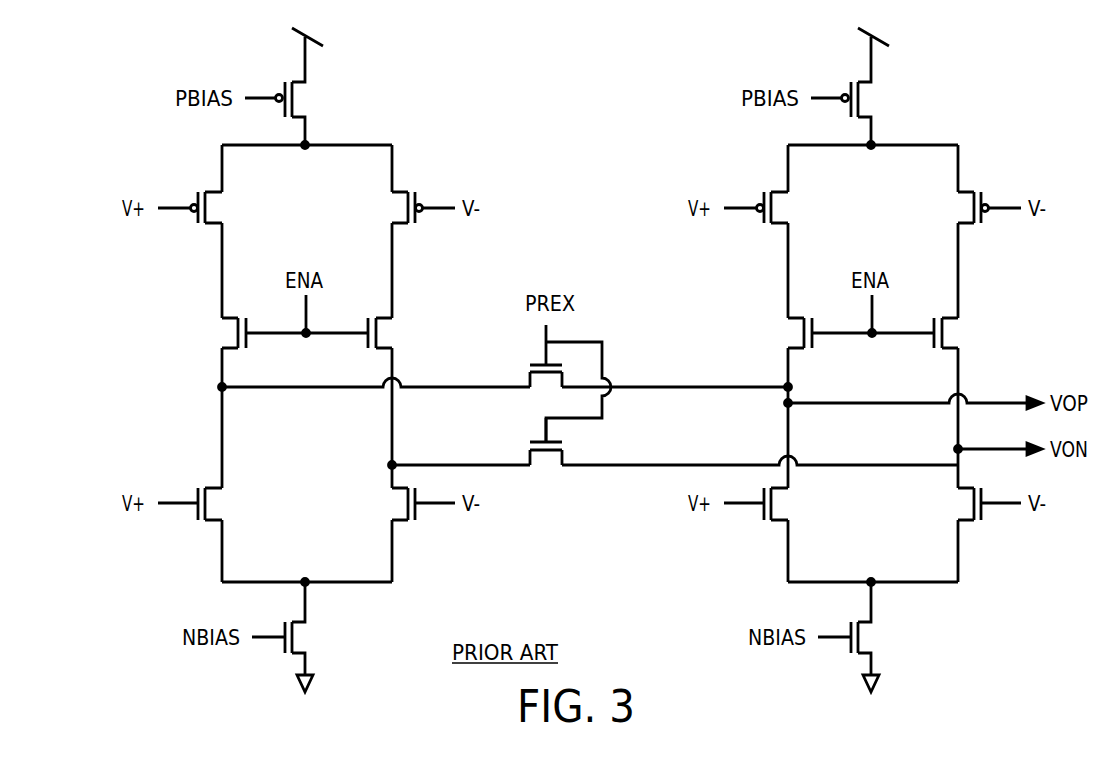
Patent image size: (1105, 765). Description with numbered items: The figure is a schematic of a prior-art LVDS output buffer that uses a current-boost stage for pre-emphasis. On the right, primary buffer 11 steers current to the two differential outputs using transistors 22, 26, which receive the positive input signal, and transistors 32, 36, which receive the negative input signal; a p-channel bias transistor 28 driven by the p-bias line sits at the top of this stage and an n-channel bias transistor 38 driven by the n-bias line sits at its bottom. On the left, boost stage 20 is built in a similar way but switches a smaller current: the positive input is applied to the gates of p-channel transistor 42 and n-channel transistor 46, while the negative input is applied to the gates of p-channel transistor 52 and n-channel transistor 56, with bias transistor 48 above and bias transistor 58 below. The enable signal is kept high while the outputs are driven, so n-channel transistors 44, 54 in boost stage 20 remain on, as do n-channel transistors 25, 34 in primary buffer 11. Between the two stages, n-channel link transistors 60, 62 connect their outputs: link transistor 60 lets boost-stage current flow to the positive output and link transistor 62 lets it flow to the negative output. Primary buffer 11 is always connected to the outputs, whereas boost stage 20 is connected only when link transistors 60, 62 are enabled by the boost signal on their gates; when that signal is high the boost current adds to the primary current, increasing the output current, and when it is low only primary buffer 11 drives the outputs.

The primary buffer 11 is at (887, 205).
The boost stage 20 is at (321, 205).
The transistor 22 is at (779, 208).
The n-channel transistor 25 is at (797, 330).
The transistor 26 is at (776, 507).
The PMOS bias transistor 28 is at (866, 98).
The transistor 32 is at (958, 205).
The n-channel transistor 34 is at (948, 337).
The transistor 36 is at (958, 502).
The NMOS bias transistor 38 is at (864, 640).
The p-channel transistor 42 is at (213, 208).
The n-channel transistor 44 is at (231, 330).
The n-channel transistor 46 is at (210, 507).
The PMOS bias transistor 48 is at (300, 98).
The p-channel transistor 52 is at (392, 205).
The n-channel transistor 54 is at (382, 337).
The n-channel transistor 56 is at (392, 502).
The NMOS bias transistor 58 is at (298, 640).
The link transistor 60 is at (530, 372).
The link transistor 62 is at (549, 466).